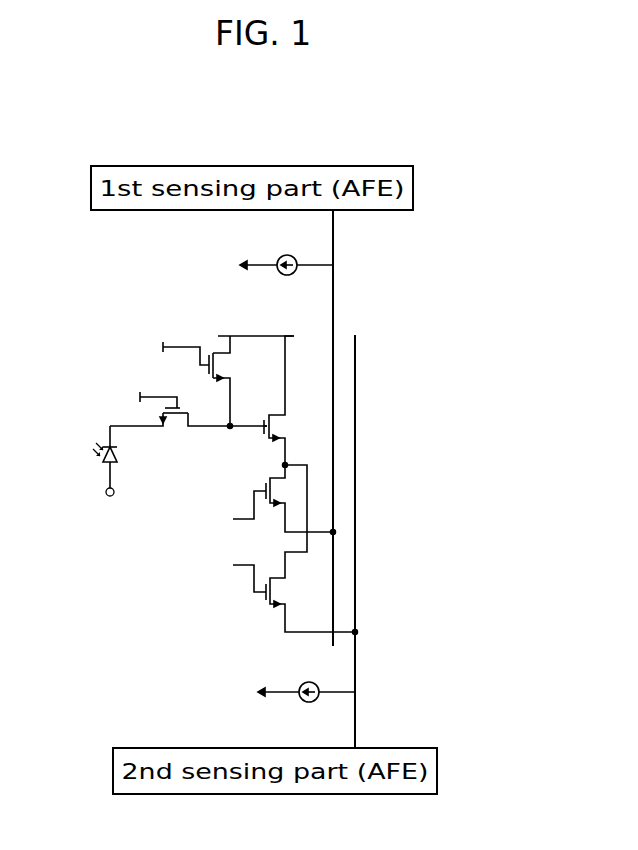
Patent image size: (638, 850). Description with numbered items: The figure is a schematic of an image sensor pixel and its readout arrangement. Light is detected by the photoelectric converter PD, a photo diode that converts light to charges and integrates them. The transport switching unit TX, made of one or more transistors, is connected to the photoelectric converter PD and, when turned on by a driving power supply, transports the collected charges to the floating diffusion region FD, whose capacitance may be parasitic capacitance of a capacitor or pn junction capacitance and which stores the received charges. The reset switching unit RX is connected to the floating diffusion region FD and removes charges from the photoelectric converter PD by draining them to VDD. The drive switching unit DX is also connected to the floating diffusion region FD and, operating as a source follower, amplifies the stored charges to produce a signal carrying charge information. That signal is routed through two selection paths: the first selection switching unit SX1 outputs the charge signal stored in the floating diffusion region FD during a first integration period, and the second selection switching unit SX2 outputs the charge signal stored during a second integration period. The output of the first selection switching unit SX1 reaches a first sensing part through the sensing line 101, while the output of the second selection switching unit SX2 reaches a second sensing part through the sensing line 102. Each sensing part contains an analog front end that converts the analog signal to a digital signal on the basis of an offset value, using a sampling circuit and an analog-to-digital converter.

The sensing line 101 is at (333, 423).
The sensing line 102 is at (355, 580).
The photoelectric converter PD is at (98, 461).
The transport switching unit TX is at (188, 402).
The reset switching unit RX is at (196, 376).
The drive switching unit DX is at (286, 400).
The first selection switching unit SX1 is at (275, 498).
The second selection switching unit SX2 is at (286, 548).
The floating diffusion region FD is at (226, 436).
The element VDD is at (256, 327).